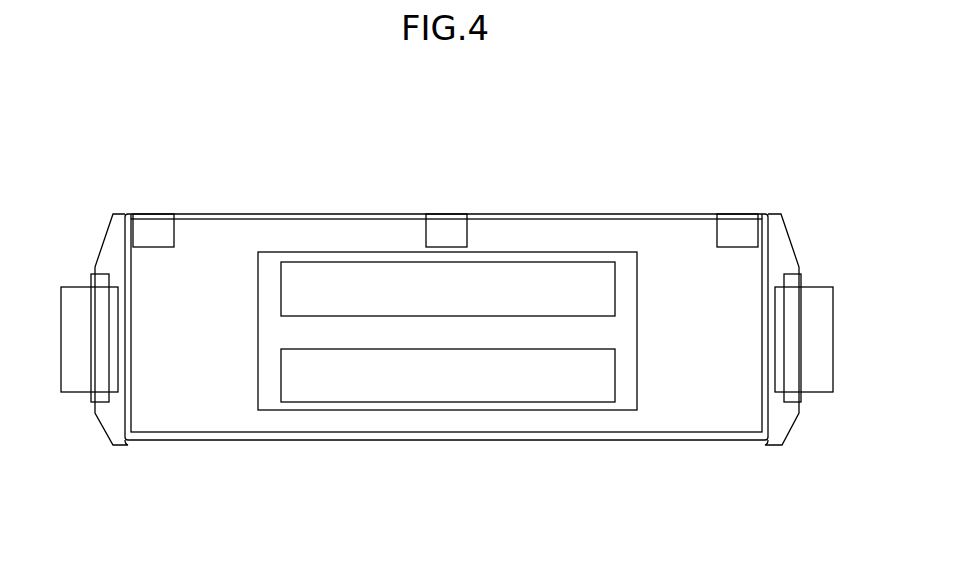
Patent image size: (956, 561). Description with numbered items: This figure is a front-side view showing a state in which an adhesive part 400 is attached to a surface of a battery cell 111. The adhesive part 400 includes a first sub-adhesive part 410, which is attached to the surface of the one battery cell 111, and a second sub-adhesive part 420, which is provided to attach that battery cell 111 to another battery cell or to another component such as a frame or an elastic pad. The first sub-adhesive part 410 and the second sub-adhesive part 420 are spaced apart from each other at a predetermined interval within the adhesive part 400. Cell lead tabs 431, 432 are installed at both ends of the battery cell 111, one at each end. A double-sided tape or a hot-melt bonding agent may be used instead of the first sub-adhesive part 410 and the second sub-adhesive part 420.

The battery cell 111 is at (576, 213).
The adhesive part 400 is at (454, 325).
The first sub-adhesive part 410 is at (623, 252).
The second sub-adhesive part 420 is at (428, 387).
The cell lead tab 431 is at (818, 378).
The cell lead tab 432 is at (79, 383).